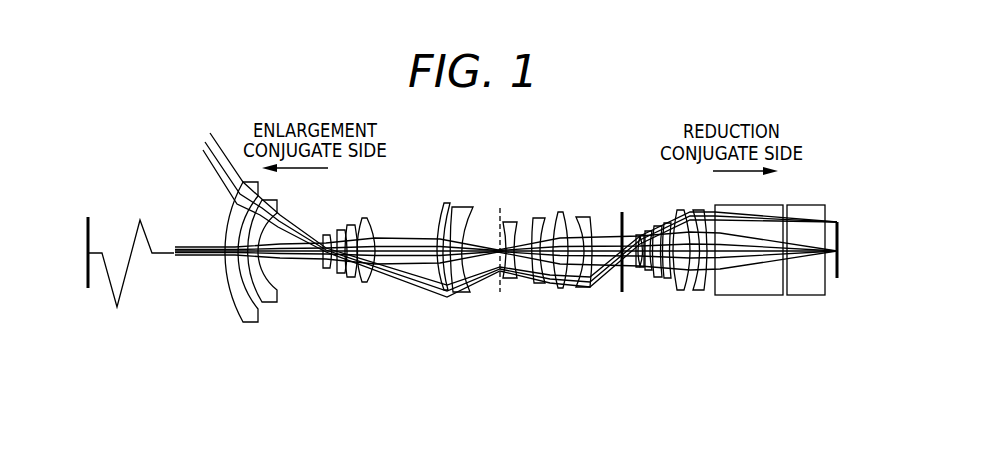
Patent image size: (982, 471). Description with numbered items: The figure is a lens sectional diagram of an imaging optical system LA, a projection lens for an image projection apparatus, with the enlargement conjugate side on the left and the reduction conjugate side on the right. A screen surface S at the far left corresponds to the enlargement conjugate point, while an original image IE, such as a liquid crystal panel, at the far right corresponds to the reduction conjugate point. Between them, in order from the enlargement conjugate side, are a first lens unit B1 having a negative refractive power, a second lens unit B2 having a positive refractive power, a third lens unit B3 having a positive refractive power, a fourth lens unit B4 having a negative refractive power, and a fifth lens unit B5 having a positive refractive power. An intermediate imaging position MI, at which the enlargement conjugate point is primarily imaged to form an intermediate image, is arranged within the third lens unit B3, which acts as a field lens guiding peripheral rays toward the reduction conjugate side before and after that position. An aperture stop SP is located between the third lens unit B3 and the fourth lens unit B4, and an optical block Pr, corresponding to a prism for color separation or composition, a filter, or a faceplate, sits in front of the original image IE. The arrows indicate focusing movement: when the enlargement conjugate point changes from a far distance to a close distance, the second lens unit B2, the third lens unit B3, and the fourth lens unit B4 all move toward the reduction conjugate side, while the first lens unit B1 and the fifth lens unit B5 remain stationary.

The screen surface S is at (91, 219).
The imaging optical system LA is at (467, 294).
The first lens unit B1 is at (285, 323).
The second lens unit B2 is at (383, 299).
The third lens unit B3 is at (600, 300).
The fourth lens unit B4 is at (650, 299).
The fifth lens unit B5 is at (680, 273).
The intermediate imaging position MI is at (498, 221).
The aperture stop SP is at (619, 211).
The optical block Pr is at (828, 305).
The original image IE is at (838, 220).